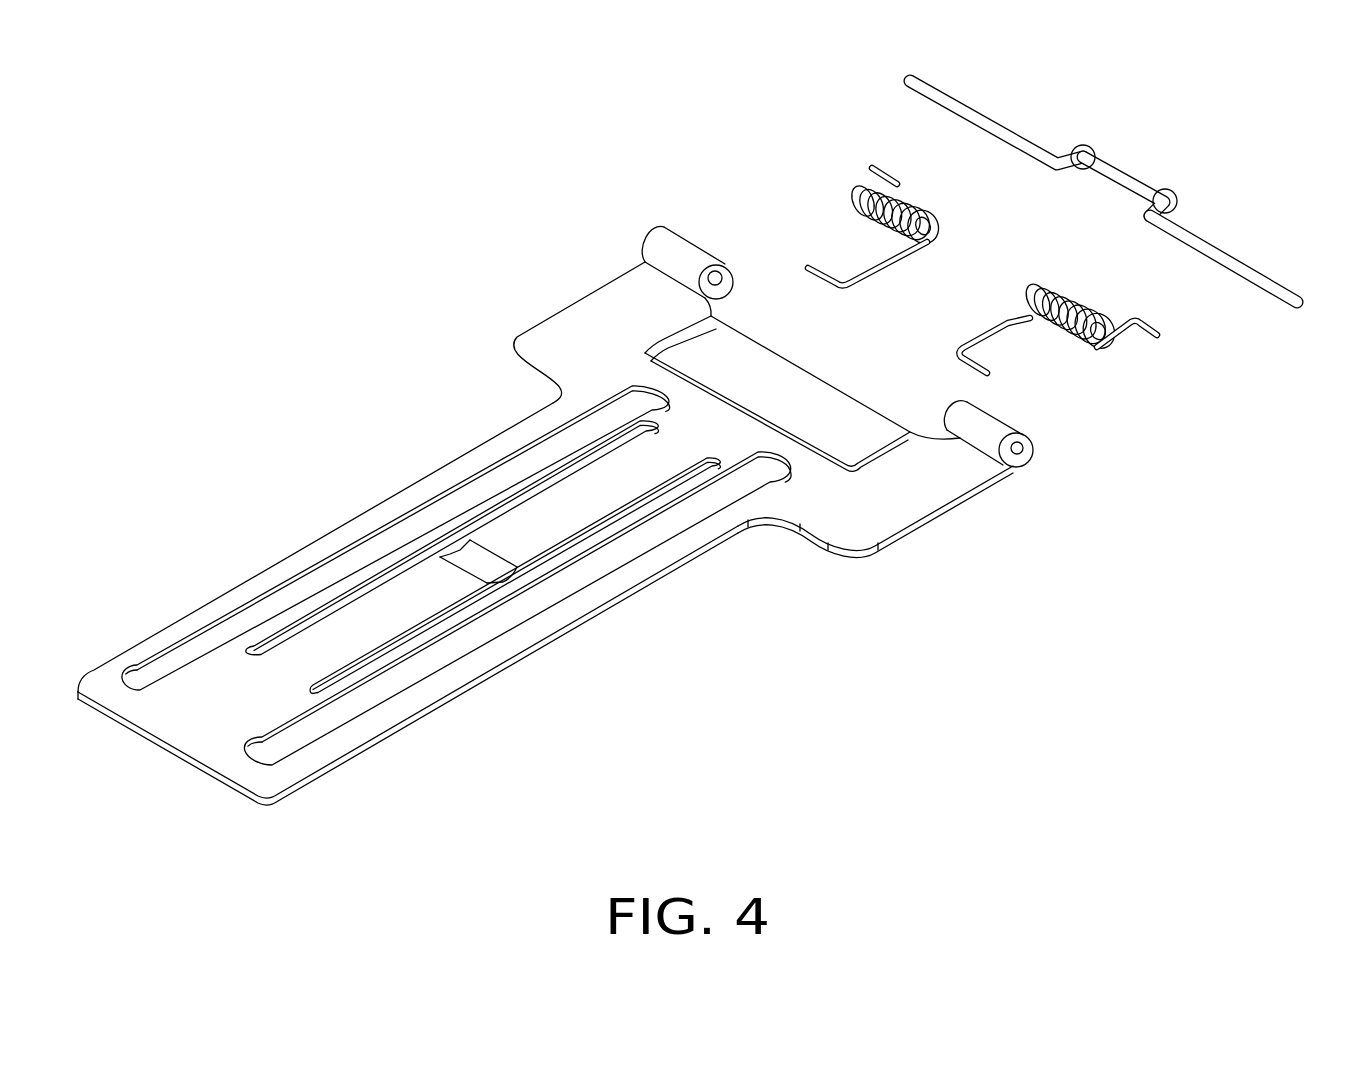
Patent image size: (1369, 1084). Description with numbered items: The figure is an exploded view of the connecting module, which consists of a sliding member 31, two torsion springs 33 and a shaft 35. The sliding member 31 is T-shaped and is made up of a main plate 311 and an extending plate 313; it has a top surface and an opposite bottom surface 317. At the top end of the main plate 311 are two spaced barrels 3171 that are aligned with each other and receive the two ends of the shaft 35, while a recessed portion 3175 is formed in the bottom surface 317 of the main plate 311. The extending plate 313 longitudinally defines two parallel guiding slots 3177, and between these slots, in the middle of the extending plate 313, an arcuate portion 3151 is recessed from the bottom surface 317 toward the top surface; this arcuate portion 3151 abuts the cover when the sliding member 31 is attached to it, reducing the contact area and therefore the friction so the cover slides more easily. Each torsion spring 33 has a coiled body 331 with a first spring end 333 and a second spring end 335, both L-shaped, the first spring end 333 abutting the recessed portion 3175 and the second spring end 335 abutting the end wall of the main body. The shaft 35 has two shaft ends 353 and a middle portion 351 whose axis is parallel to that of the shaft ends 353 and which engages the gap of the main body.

The sliding member 31 is at (547, 338).
The main plate 311 is at (885, 510).
The extending plate 313 is at (672, 553).
The arcuate portion 3151 is at (500, 585).
The bottom surface 317 is at (225, 716).
The barrels 3171 is at (656, 242).
The recessed portion 3175 is at (853, 435).
The guiding slots 3177 is at (368, 592).
The torsion spring 33 is at (858, 191).
The coil of torsion spring 331 is at (1092, 344).
The first spring end 333 is at (1000, 327).
The second spring end 335 is at (1153, 338).
The shaft 35 is at (1037, 122).
The middle portion 351 is at (1130, 176).
The shaft ends 353 is at (1223, 263).